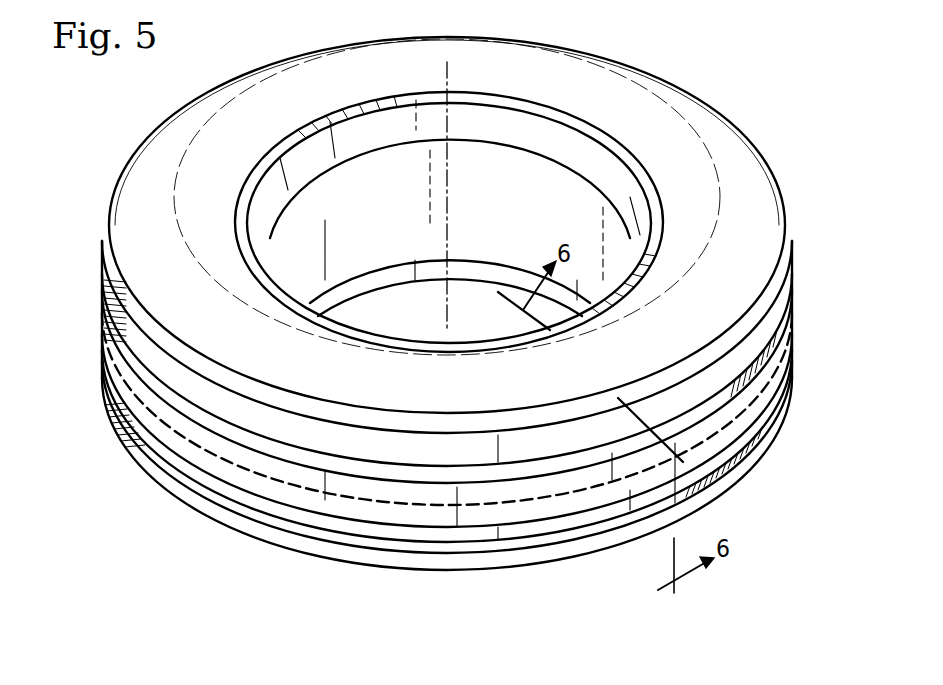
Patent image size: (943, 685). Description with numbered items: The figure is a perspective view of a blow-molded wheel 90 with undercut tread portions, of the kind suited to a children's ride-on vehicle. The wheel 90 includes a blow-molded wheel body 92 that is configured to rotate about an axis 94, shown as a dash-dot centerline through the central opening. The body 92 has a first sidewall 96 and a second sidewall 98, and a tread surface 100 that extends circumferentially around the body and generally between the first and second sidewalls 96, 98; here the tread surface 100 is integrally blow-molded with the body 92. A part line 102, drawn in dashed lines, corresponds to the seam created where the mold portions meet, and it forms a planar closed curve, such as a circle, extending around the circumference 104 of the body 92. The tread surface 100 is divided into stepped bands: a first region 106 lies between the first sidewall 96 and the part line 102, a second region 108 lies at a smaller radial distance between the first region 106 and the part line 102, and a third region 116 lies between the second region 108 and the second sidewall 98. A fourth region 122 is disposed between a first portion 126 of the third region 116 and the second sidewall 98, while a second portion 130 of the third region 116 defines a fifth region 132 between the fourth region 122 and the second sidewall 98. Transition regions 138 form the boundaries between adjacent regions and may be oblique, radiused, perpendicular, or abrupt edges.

The blow-molded wheel 90 is at (118, 117).
The blow-molded wheel body 92 is at (119, 165).
The axis 94 is at (450, 196).
The first sidewall 96 is at (605, 82).
The second sidewall 98 is at (430, 280).
The tread surface 100 is at (799, 298).
The part line 102 is at (208, 456).
The circumference 104 is at (136, 403).
The first region 106 is at (357, 422).
The second region 108 is at (417, 450).
The third region 116 is at (482, 560).
The fourth region 122 is at (595, 513).
The first portion of the third region 126 is at (538, 512).
The second portion of the third region 130 is at (743, 463).
The fifth region 132 is at (713, 488).
The transition regions 138 is at (300, 457).